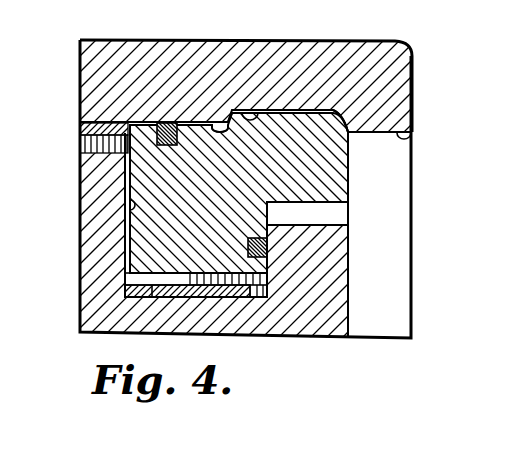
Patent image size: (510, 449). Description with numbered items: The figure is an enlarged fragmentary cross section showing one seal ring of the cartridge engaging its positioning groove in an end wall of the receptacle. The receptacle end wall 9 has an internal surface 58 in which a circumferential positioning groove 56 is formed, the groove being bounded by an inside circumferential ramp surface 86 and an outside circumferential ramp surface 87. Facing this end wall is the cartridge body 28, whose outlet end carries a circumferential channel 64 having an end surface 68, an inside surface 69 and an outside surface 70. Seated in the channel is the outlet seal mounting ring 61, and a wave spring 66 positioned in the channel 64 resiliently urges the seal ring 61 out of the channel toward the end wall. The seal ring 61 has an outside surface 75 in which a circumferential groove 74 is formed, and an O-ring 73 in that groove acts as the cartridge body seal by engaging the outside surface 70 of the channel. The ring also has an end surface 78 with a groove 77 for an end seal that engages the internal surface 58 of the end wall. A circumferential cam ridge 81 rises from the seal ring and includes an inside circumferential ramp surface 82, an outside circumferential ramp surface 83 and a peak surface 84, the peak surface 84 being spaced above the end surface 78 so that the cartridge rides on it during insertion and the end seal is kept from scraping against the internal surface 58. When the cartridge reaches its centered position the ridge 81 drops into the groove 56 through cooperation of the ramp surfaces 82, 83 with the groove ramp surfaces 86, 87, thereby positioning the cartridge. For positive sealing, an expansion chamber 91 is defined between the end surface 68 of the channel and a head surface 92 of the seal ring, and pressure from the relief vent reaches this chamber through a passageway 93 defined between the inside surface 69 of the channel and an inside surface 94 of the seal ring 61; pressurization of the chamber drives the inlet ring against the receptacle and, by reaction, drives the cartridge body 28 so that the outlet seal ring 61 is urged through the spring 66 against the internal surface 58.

The receptacle end wall 9 is at (406, 72).
The cartridge body 28 is at (97, 312).
The positioning groove 56 is at (259, 109).
The internal surface 58 is at (413, 138).
The outlet seal mounting ring 61 is at (334, 171).
The circumferential channel 64 is at (158, 297).
The wave spring 66 is at (190, 288).
The end surface 68 is at (217, 288).
The inside surface 69 is at (127, 213).
The outside surface 70 is at (262, 295).
The O-ring 73 is at (258, 250).
The circumferential groove 74 is at (267, 246).
The outside surface 75 is at (267, 210).
The groove 77 is at (168, 124).
The end surface 78 is at (176, 120).
The cam ridge 81 is at (286, 109).
The inside circumferential ramp surface 82 is at (232, 112).
The outside circumferential ramp surface 83 is at (338, 118).
The peak surface 84 is at (319, 109).
The inside circumferential ramp surface 86 is at (214, 124).
The outside circumferential ramp surface 87 is at (348, 146).
The expansion chamber 91 is at (245, 282).
The head surface 92 is at (183, 273).
The passageway 93 is at (127, 170).
The inside surface 94 is at (127, 188).